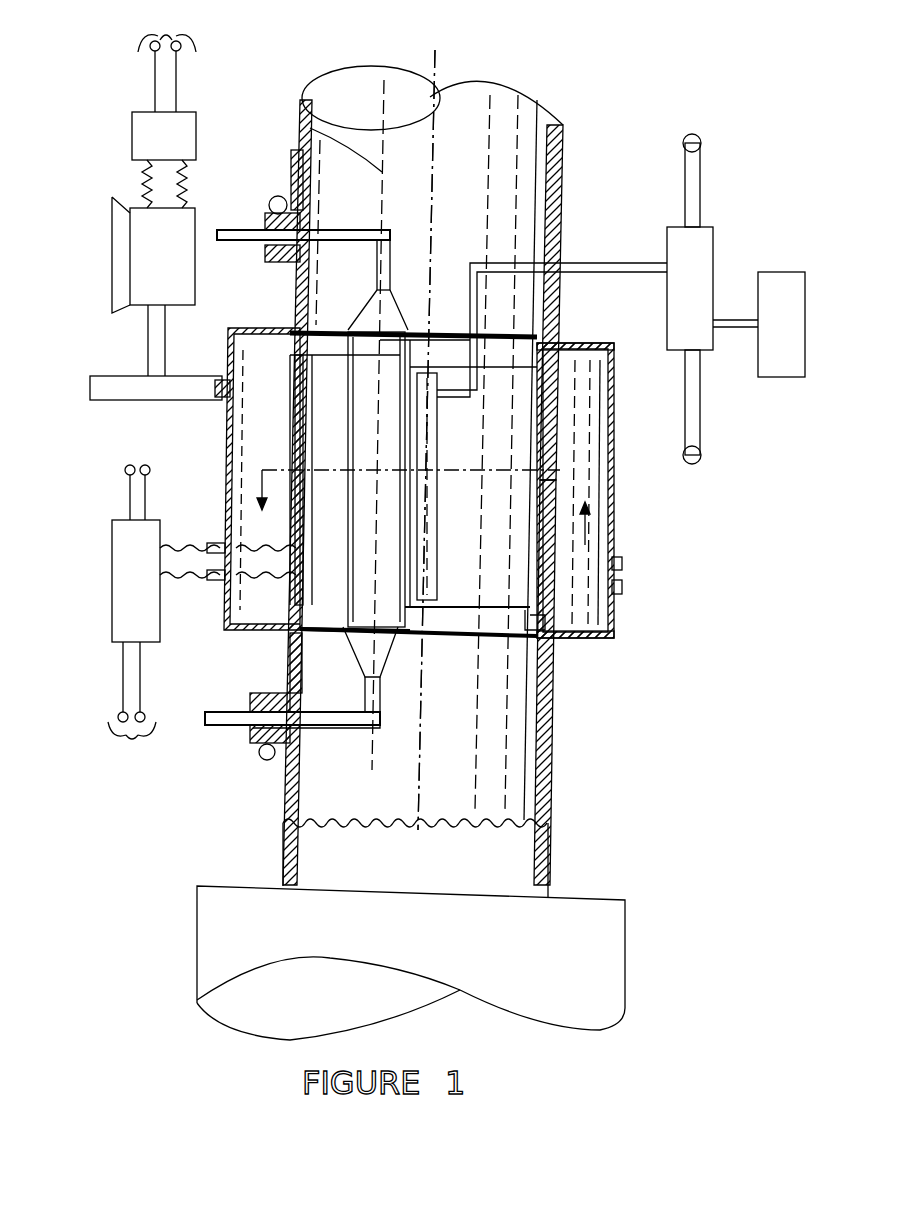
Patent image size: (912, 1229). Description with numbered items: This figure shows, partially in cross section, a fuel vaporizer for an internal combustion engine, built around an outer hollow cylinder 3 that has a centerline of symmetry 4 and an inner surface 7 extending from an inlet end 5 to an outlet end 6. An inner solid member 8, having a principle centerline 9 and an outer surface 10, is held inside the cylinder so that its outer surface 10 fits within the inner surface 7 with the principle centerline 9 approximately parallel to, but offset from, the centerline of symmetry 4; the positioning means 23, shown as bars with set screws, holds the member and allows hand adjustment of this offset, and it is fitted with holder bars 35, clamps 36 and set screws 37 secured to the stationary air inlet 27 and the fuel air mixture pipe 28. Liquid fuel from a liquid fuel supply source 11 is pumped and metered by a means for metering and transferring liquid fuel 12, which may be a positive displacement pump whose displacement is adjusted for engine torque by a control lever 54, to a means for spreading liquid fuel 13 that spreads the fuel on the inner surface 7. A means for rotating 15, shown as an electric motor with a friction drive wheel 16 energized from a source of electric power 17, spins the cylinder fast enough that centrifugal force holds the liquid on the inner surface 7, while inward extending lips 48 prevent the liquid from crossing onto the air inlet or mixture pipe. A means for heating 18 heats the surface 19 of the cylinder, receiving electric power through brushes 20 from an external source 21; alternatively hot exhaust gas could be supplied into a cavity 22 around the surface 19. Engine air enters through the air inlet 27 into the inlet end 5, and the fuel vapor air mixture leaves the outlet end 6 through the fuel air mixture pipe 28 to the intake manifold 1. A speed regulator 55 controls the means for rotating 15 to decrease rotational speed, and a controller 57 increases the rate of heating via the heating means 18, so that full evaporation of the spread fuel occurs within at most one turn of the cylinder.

The intake manifold 1 is at (197, 903).
The outer hollow cylinder 3 is at (477, 620).
The centerline of symmetry 4 is at (418, 770).
The inlet end 5 is at (495, 348).
The outlet end 6 is at (533, 648).
The inner surface 7 is at (515, 412).
The inner solid member 8 is at (383, 372).
The principle centerline 9 is at (380, 170).
The outer surface 10 is at (345, 393).
The liquid fuel supply source 11 is at (778, 378).
The means for metering and transferring liquid fuel 12 is at (713, 248).
The means for spreading liquid fuel 13 is at (430, 462).
The means for rotating 15 is at (112, 292).
The friction drive wheel 16 is at (120, 378).
The source of electric power 17 is at (167, 57).
The means for heating 18 is at (560, 580).
The surface 19 is at (258, 470).
The brushes 20 is at (218, 580).
The external source 21 is at (132, 702).
The cavity 22 is at (552, 500).
The positioning means 23 is at (265, 215).
The air inlet 27 is at (567, 148).
The fuel air mixture pipe 28 is at (548, 775).
The holder bars 35 is at (245, 240).
The clamps 36 is at (266, 212).
The set screws 37 is at (276, 196).
The inward extending lips 48 is at (545, 360).
The control lever 54 is at (700, 440).
The speed regulator 55 is at (132, 128).
The controller 57 is at (112, 590).